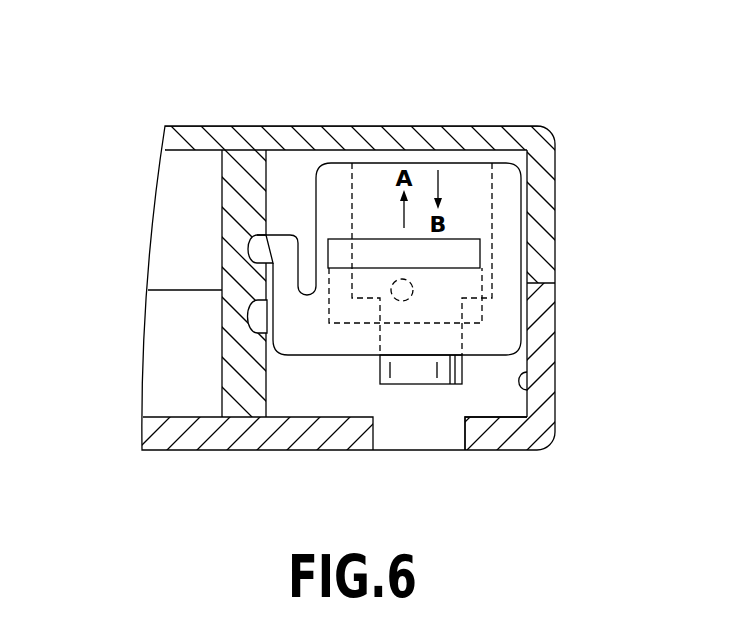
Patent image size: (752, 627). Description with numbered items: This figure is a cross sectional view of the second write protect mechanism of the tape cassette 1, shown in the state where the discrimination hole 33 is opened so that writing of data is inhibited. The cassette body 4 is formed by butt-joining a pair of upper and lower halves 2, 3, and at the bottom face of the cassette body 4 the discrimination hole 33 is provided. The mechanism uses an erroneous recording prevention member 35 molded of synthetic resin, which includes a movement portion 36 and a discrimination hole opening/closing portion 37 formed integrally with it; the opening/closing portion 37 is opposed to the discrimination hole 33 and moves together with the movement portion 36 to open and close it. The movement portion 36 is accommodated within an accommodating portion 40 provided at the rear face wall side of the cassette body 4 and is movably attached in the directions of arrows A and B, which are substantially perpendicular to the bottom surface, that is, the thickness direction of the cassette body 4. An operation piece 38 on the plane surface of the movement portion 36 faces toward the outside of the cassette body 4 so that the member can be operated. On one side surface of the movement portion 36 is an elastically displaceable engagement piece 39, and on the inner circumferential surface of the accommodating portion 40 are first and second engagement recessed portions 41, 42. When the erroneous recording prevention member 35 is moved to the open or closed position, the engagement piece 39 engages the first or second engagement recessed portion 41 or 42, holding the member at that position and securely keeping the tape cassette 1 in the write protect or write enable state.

The tape cassette 1 is at (556, 101).
The upper half 2 is at (548, 170).
The lower half 3 is at (549, 427).
The cassette body 4 is at (467, 138).
The discrimination hole 33 is at (468, 430).
The erroneous recording prevention member 35 is at (510, 236).
The movement portion 36 is at (374, 172).
The discrimination hole opening/closing portion 37 is at (413, 378).
The operation piece 38 is at (458, 256).
The engagement piece 39 is at (287, 240).
The accommodating portion 40 is at (530, 371).
The first engagement recessed portion 41 is at (260, 270).
The second engagement recessed portion 42 is at (257, 336).